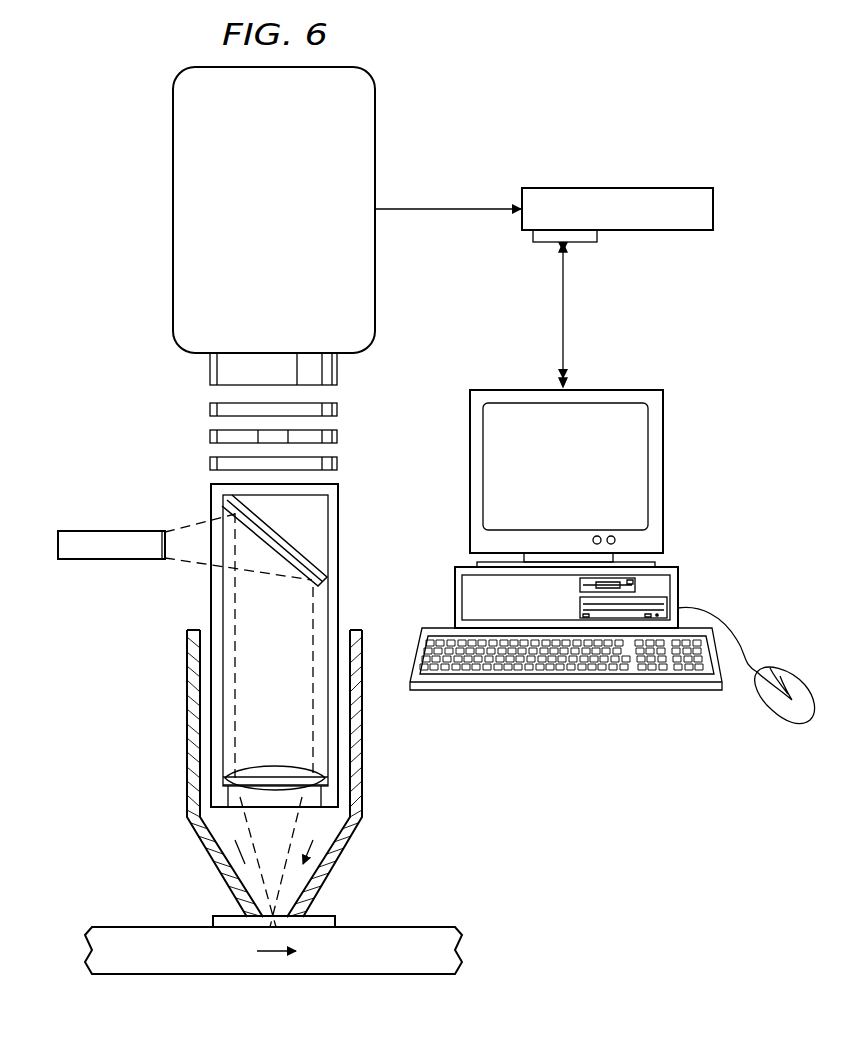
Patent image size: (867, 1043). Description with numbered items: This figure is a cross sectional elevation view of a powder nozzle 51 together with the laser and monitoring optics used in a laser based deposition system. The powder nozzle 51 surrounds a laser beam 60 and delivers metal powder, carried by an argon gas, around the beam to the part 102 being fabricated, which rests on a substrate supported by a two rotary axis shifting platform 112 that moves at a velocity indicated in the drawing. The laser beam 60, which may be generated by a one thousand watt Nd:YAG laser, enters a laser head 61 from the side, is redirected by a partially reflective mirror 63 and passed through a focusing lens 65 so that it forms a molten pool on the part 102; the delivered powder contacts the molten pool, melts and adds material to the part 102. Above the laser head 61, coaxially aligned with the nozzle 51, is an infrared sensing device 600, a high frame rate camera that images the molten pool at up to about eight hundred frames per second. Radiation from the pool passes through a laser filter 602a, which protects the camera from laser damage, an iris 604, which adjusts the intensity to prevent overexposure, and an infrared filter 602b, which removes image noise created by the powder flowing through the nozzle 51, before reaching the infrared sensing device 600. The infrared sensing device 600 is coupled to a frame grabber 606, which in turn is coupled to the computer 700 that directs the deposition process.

The infrared sensing device 600 is at (173, 143).
The frame grabber 606 is at (652, 188).
The computer 700 is at (668, 469).
The infrared filter 602b is at (210, 409).
The iris 604 is at (338, 436).
The laser filter 602a is at (338, 462).
The laser beam 60 is at (107, 559).
The laser head 61 is at (210, 592).
The partially reflective mirror 63 is at (280, 560).
The focusing lens 65 is at (277, 762).
The powder nozzle 51 is at (238, 848).
The part 102 is at (327, 917).
The two rotary axis shifting platform 112 is at (233, 974).